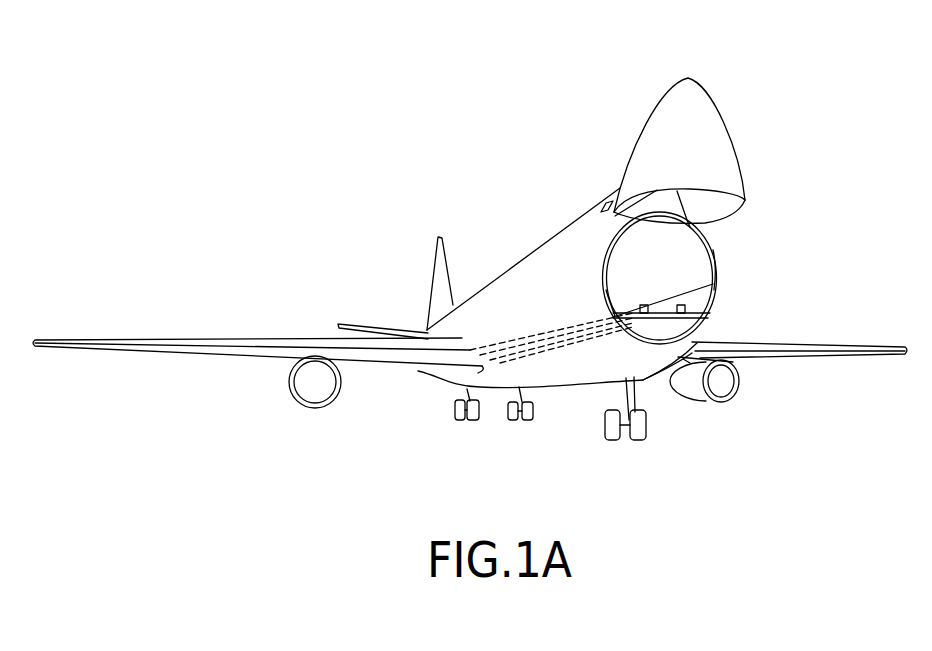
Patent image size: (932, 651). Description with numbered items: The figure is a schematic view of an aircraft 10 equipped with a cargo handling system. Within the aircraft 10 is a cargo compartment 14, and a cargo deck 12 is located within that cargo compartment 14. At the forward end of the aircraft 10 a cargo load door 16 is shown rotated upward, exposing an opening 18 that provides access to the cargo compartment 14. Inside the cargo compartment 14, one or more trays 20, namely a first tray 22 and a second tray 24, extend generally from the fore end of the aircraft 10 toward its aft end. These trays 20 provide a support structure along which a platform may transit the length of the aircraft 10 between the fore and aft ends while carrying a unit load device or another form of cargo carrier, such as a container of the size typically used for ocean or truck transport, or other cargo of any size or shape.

The aircraft 10 is at (447, 116).
The cargo deck 12 is at (708, 325).
The cargo compartment 14 is at (681, 249).
The cargo load door 16 is at (716, 107).
The opening 18 is at (724, 251).
The trays 20 is at (650, 282).
The first tray 22 is at (713, 285).
The second tray 24 is at (606, 290).